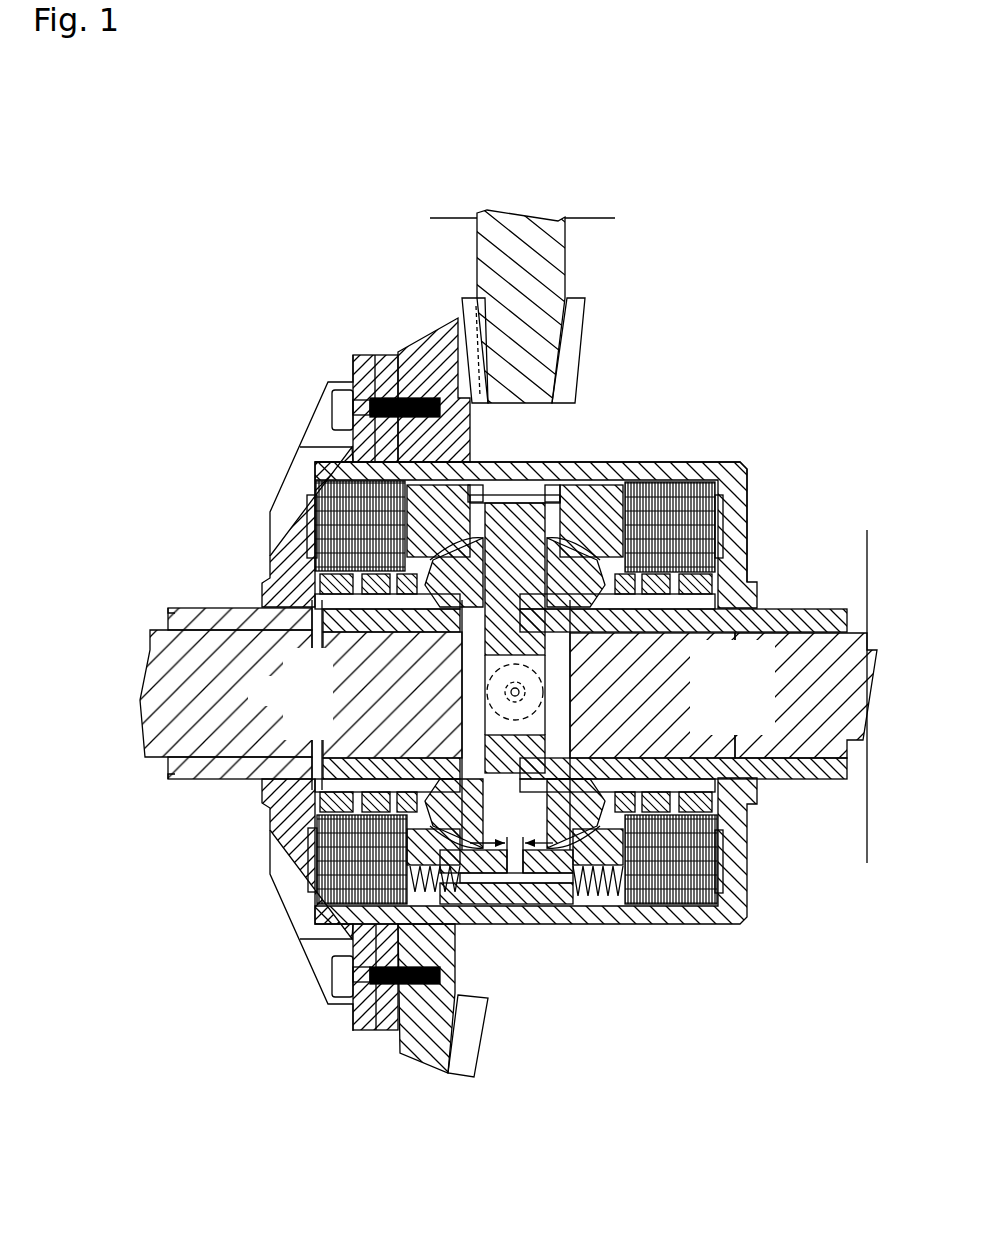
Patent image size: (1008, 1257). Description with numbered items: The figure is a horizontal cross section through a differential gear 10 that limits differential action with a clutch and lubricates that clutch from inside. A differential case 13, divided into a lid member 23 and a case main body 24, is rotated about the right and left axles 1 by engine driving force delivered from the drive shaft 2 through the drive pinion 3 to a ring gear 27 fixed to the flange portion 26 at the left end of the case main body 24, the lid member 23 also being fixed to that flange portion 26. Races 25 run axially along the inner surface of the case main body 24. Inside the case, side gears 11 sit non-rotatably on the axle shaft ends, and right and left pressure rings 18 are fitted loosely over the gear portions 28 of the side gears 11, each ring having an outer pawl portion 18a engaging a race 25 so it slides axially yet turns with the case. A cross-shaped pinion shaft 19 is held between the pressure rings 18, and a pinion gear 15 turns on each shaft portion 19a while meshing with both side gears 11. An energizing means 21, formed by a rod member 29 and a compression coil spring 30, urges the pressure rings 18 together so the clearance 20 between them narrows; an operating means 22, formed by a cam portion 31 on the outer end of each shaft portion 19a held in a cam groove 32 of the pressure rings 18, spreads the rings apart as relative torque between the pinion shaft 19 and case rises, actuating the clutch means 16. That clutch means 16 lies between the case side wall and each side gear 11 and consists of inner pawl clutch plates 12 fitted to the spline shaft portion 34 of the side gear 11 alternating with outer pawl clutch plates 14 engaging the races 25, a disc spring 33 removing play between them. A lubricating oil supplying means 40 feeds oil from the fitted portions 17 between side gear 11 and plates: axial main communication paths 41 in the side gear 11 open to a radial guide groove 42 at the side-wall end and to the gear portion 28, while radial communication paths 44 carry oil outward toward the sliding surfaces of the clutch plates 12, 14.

The axle 1 is at (177, 745).
The drive shaft 2 is at (565, 246).
The drive pinion 3 is at (580, 342).
The differential gear 10 is at (730, 445).
The side gear 11 is at (297, 653).
The inner pawl clutch plate 12 is at (700, 533).
The differential case 13 is at (750, 462).
The outer pawl clutch plate 14 is at (670, 483).
The pinion gear 15 is at (575, 605).
The clutch means 16 is at (310, 902).
The fitted portion 17 is at (300, 553).
The pressure ring 18 is at (452, 485).
The outer pawl portion 18a is at (507, 897).
The pinion shaft 19 is at (552, 715).
The shaft portion 19a is at (550, 690).
The clearance 20 is at (502, 843).
The energizing means 21 is at (550, 898).
The operating means 22 is at (548, 530).
The lid member 23 is at (297, 903).
The case main body 24 is at (748, 908).
The race 25 is at (712, 493).
The flange portion 26 is at (392, 1028).
The ring gear 27 is at (435, 1060).
The gear portion 28 is at (413, 753).
The rod member 29 is at (483, 882).
The compression coil spring 30 is at (607, 890).
The cam portion 31 is at (513, 515).
The cam groove 32 is at (545, 495).
The disc spring 33 is at (317, 513).
The spline shaft portion 34 is at (360, 630).
The lubricating oil supplying means 40 is at (283, 780).
The main communication path 41 is at (700, 605).
The guide groove 42 is at (320, 585).
The radial communication path 44 is at (322, 892).